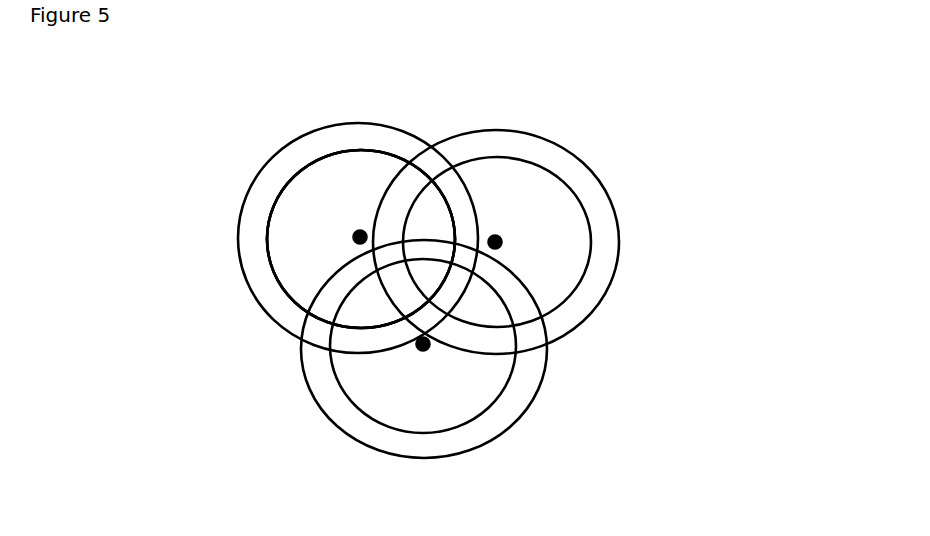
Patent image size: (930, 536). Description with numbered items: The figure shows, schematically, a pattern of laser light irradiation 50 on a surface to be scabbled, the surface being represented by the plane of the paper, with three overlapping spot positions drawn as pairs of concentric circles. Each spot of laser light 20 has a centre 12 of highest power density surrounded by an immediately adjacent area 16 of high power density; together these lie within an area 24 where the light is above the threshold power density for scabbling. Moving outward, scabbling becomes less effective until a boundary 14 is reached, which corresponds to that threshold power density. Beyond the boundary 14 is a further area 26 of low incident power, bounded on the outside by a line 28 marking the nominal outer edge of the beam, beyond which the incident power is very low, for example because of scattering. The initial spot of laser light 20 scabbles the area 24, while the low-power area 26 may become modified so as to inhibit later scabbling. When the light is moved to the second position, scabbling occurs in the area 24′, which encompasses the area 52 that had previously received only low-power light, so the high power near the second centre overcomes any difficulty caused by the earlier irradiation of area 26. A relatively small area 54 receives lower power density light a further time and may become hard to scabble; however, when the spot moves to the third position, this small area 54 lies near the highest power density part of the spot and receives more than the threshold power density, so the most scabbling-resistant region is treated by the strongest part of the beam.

The centre 12 is at (354, 237).
The boundary 14 is at (278, 190).
The area of high power density 16 is at (423, 368).
The spot of laser light 20 is at (301, 245).
The area above threshold power density 24 is at (285, 262).
The area of low incident power 26 is at (268, 292).
The line of nominal outer boundary 28 is at (272, 320).
The pattern of laser light irradiation 50 is at (598, 125).
The area 52 is at (447, 292).
The small area 54 is at (420, 315).
The area above threshold power density 24′ is at (573, 248).